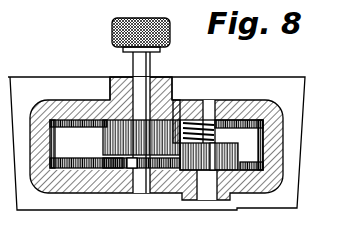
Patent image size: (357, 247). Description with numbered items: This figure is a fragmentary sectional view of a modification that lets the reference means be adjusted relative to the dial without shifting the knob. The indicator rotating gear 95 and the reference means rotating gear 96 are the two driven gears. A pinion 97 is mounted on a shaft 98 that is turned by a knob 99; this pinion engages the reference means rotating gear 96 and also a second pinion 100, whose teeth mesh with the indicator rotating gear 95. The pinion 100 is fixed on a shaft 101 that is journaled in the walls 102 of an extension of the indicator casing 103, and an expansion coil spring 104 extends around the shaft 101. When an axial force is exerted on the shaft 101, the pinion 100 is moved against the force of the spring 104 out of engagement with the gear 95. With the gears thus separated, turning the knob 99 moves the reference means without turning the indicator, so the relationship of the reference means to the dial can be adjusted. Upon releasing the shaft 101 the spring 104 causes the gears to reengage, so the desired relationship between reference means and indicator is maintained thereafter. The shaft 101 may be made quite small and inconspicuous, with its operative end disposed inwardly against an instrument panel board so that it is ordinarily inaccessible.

The indicator rotating gear 95 is at (262, 170).
The reference means rotating gear 96 is at (262, 124).
The pinion 97 is at (176, 120).
The shaft 98 is at (140, 90).
The knob 99 is at (113, 33).
The pinion 100 is at (238, 192).
The shaft 101 is at (207, 193).
The walls 102 is at (100, 180).
The indicator casing 103 is at (43, 198).
The expansion coil spring 104 is at (205, 120).